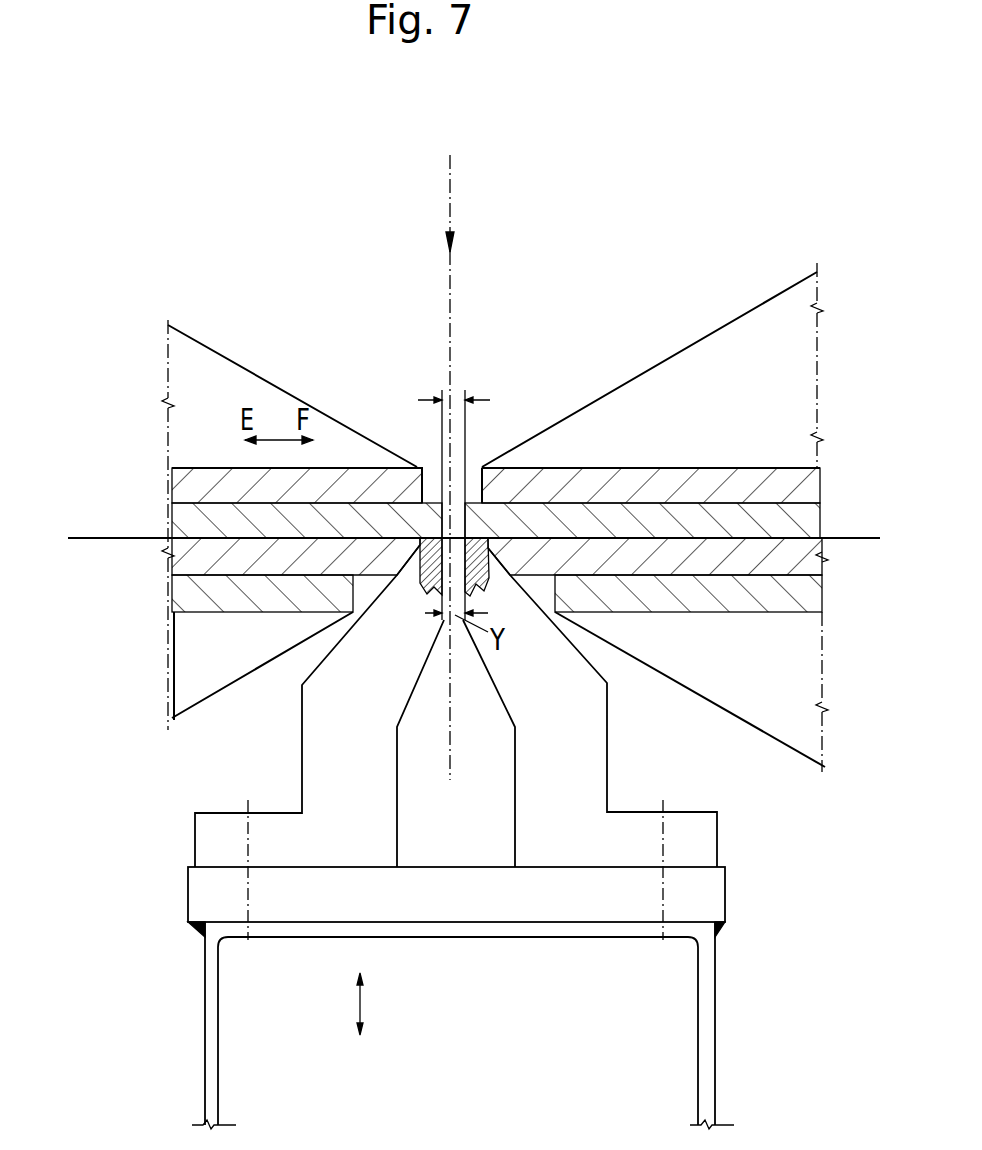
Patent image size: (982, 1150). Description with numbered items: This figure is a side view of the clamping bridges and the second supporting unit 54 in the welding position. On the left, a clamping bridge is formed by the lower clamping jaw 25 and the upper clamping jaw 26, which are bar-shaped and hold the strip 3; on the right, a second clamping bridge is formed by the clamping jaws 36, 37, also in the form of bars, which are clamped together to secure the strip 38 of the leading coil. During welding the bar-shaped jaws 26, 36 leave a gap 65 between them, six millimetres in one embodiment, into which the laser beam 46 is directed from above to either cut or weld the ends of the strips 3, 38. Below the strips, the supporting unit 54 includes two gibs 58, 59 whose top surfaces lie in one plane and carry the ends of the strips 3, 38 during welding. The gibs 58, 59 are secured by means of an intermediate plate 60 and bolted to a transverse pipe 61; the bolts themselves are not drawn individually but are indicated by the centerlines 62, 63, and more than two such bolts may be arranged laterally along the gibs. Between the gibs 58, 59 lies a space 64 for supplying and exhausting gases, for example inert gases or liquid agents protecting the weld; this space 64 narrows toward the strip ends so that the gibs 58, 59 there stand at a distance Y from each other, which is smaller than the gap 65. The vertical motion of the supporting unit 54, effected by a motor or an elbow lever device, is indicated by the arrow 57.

The strip 3 is at (81, 538).
The lower clamping jaw 25 is at (253, 563).
The upper clamping jaw 26 is at (190, 515).
The clamping jaw 36 is at (525, 463).
The clamping jaw 37 is at (775, 612).
The strip 38 is at (688, 540).
The laser beam 46 is at (447, 183).
The supporting unit 54 is at (418, 837).
The arrow 57 is at (365, 1000).
The gib 58 is at (318, 757).
The gib 59 is at (590, 758).
The intermediate plate 60 is at (210, 902).
The transverse pipe 61 is at (213, 1053).
The centerline 62 is at (248, 836).
The centerline 63 is at (663, 830).
The space 64 is at (471, 845).
The gap 65 is at (440, 395).